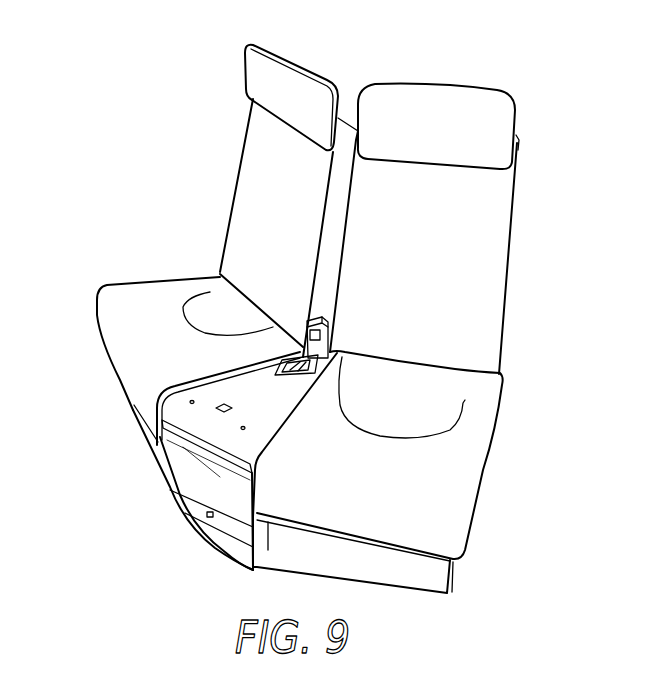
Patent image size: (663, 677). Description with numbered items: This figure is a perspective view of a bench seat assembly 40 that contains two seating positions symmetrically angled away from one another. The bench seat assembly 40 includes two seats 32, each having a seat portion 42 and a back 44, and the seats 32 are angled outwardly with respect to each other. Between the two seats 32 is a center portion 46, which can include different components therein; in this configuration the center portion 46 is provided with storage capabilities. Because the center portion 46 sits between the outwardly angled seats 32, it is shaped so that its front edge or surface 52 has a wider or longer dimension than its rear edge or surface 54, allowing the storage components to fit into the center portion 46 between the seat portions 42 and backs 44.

The seat 32 is at (117, 300).
The bench seat assembly 40 is at (573, 138).
The seat portion 42 is at (175, 368).
The back 44 is at (293, 201).
The center portion 46 is at (140, 500).
The front edge or surface 52 is at (208, 445).
The rear edge or surface 54 is at (313, 352).